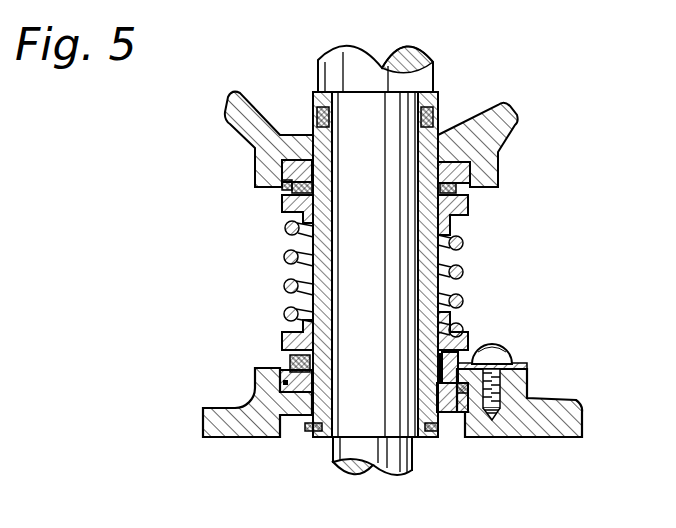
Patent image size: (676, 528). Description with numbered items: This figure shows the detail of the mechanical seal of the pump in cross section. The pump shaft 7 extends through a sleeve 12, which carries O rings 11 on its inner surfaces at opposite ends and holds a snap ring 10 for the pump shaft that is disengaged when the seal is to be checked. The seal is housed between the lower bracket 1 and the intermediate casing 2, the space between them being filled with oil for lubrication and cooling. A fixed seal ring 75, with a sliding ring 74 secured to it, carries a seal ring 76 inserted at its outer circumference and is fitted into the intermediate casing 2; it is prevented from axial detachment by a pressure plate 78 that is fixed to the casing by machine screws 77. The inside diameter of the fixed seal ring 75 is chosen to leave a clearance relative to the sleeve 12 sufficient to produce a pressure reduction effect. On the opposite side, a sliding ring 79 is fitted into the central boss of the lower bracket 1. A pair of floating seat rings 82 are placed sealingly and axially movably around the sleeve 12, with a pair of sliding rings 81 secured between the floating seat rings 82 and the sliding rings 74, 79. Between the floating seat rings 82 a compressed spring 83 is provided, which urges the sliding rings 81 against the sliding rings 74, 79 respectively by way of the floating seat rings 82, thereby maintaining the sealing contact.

The lower bracket 1 is at (233, 124).
The intermediate casing 2 is at (203, 420).
The pump shaft 7 is at (320, 68).
The snap ring 10 is at (308, 431).
The O rings 11 is at (440, 93).
The sleeve 12 is at (440, 128).
The sliding ring 74 is at (462, 415).
The fixed seal ring 75 is at (480, 430).
The seal ring 76 is at (280, 382).
The machine screws 77 is at (512, 350).
The pressure plate 78 is at (528, 367).
The sliding ring 79 is at (462, 172).
The sliding rings 81 is at (292, 190).
The floating seat rings 82 is at (467, 203).
The spring 83 is at (284, 254).